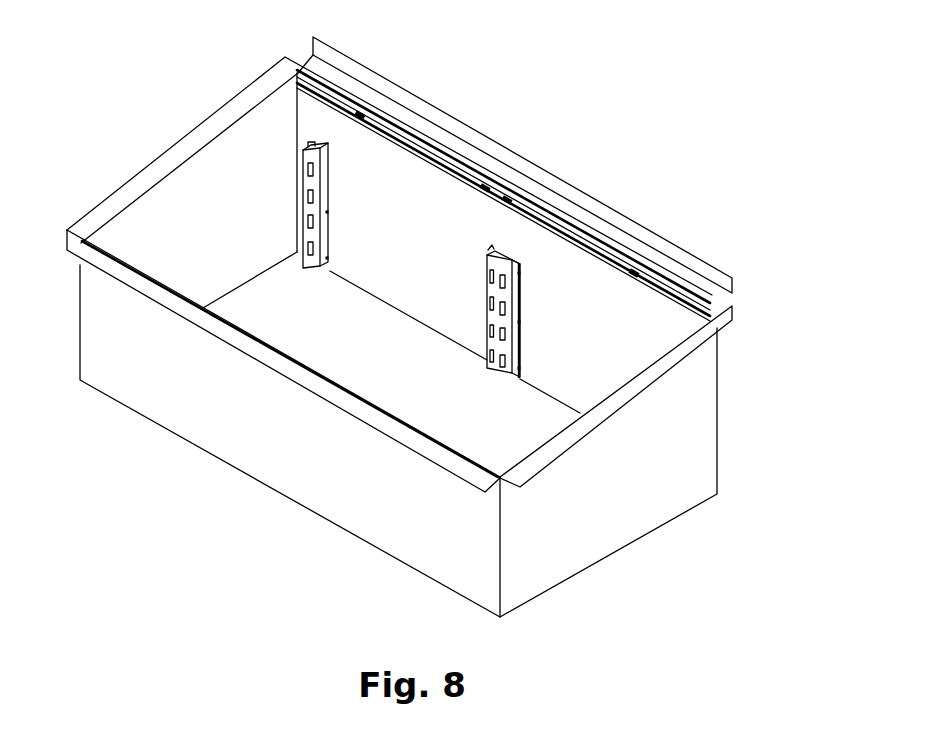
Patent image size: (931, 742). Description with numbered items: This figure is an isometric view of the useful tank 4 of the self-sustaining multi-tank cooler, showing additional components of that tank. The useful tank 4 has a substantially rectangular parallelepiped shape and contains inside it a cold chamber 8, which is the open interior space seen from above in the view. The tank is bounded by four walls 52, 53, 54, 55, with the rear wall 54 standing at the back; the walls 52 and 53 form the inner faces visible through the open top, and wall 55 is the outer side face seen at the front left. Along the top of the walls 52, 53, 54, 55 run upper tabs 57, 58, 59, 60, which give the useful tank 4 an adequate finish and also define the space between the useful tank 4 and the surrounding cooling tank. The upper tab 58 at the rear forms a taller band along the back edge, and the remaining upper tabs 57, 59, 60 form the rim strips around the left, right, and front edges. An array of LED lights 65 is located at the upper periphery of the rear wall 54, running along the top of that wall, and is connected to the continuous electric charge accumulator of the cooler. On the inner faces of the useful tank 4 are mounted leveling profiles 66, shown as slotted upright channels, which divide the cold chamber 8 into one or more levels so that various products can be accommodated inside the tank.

The useful tank 4 is at (633, 470).
The cold chamber 8 is at (313, 308).
The wall of the useful tank 52 is at (217, 218).
The wall of the useful tank 53 is at (585, 305).
The rear wall 54 is at (590, 517).
The wall of the useful tank 55 is at (305, 450).
The upper tab 57 is at (147, 168).
The upper tab 58 is at (403, 93).
The upper tab 59 is at (682, 343).
The upper tab 60 is at (185, 310).
The array of LED lights 65 is at (518, 195).
The leveling profiles 66 is at (490, 248).